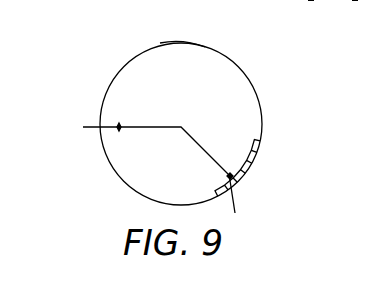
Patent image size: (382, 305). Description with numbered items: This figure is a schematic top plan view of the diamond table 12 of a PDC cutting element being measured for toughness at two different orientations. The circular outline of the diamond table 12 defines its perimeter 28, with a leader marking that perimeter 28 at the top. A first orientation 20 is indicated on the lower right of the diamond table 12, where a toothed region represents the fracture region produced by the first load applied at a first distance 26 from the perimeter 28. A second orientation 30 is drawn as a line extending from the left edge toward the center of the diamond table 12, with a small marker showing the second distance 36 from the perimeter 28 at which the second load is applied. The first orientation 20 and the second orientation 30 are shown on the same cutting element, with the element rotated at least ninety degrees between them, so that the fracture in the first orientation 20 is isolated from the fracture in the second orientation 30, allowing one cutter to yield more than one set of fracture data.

The diamond table 12 is at (236, 92).
The perimeter 28 is at (167, 43).
The second orientation 30 is at (138, 149).
The second distance 36 is at (118, 117).
The first orientation 20 is at (233, 183).
The first distance 26 is at (240, 205).